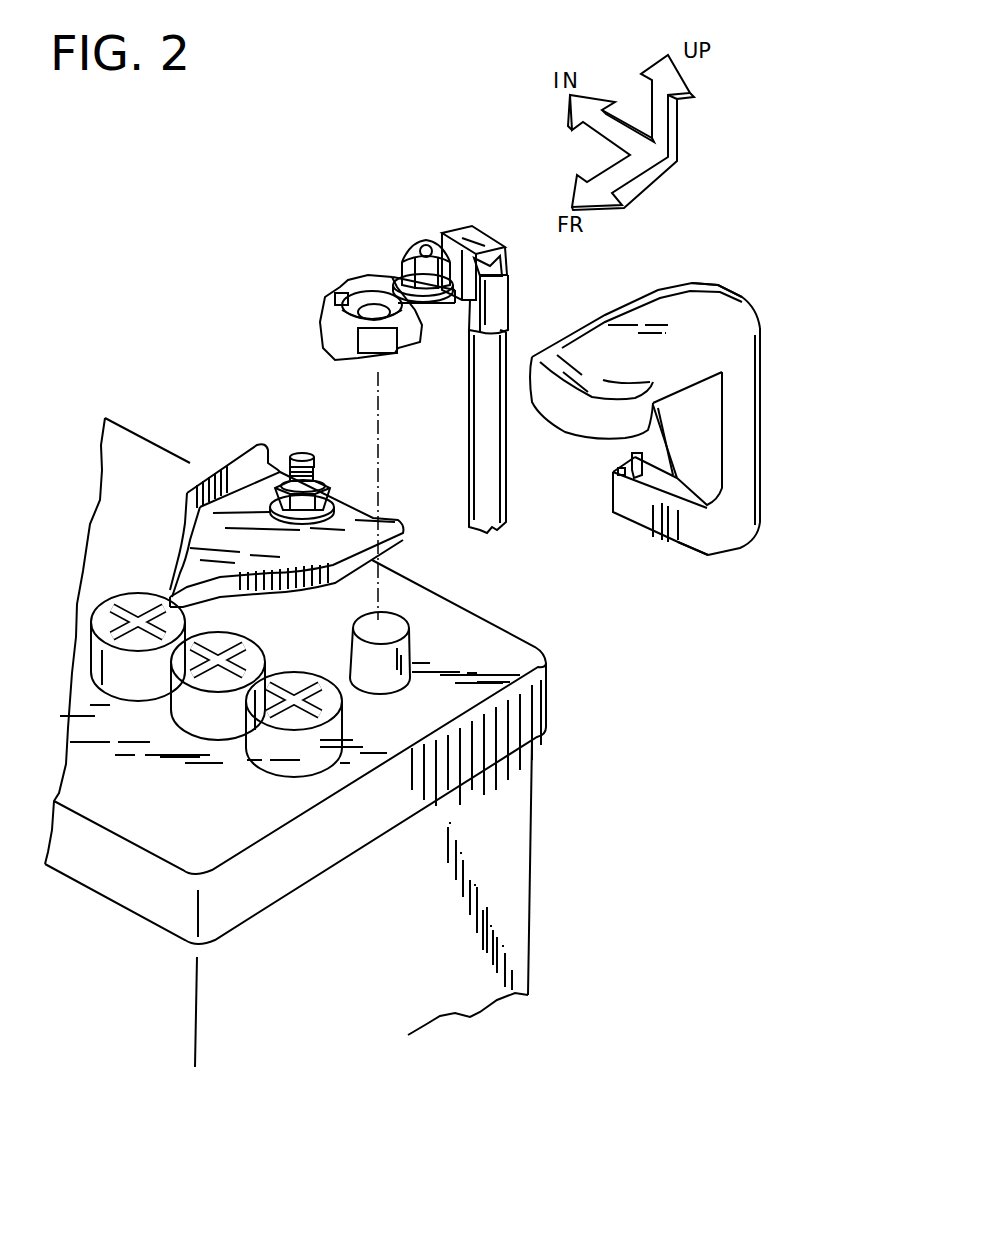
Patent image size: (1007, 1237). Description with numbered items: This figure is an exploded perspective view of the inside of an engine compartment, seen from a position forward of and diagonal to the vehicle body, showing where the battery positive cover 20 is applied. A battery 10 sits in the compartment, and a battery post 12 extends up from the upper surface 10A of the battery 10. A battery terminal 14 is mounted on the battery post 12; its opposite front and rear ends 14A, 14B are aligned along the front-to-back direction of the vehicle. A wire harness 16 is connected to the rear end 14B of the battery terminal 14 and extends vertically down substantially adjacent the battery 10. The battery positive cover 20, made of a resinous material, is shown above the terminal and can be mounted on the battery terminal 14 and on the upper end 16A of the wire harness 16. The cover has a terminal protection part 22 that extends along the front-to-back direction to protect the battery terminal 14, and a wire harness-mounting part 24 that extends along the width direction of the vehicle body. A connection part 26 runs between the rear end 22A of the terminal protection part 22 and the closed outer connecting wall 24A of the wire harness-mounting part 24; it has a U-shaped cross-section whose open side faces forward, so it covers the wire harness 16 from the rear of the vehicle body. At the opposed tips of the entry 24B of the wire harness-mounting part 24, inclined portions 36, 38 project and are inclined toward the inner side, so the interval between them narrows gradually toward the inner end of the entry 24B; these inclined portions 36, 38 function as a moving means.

The battery 10 is at (526, 855).
The upper surface 10A is at (453, 633).
The battery post 12 is at (378, 687).
The battery terminal 14 is at (458, 218).
The front end 14A is at (377, 278).
The rear end 14B is at (500, 306).
The wire harness 16 is at (462, 443).
The upper end 16A is at (467, 327).
The battery positive cover 20 is at (838, 377).
The terminal protection part 22 is at (712, 364).
The rear end 22A is at (750, 306).
The wire harness-mounting part 24 is at (712, 558).
The closed outer connecting wall 24A is at (738, 520).
The entry 24B is at (603, 466).
The connection part 26 is at (740, 436).
The inclined portion 36 is at (612, 458).
The inclined portion 38 is at (610, 468).